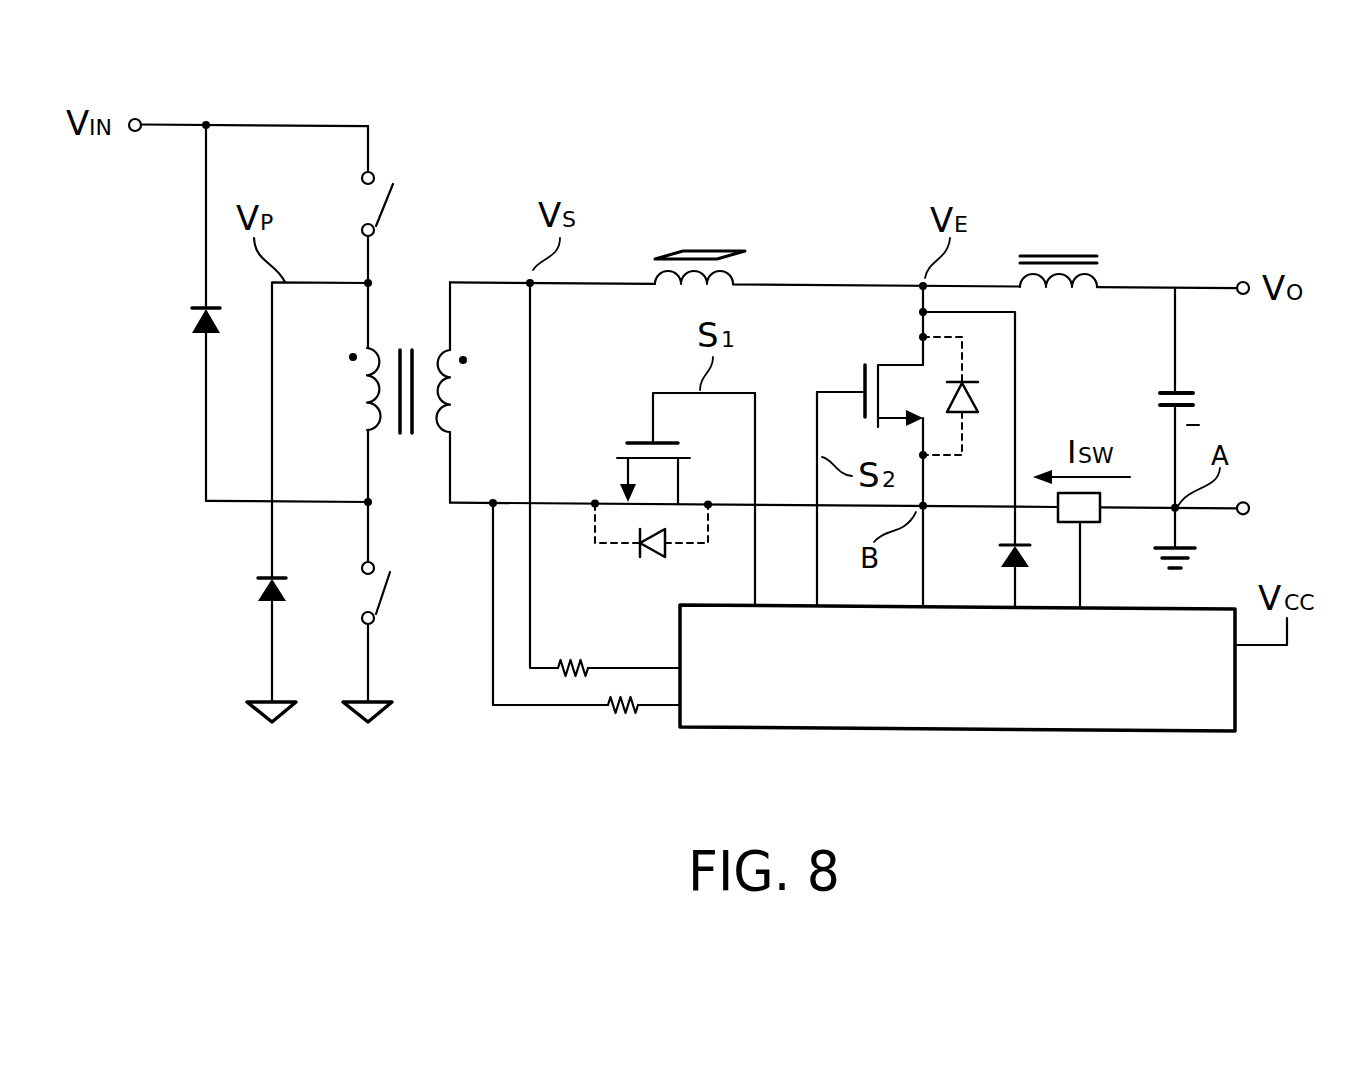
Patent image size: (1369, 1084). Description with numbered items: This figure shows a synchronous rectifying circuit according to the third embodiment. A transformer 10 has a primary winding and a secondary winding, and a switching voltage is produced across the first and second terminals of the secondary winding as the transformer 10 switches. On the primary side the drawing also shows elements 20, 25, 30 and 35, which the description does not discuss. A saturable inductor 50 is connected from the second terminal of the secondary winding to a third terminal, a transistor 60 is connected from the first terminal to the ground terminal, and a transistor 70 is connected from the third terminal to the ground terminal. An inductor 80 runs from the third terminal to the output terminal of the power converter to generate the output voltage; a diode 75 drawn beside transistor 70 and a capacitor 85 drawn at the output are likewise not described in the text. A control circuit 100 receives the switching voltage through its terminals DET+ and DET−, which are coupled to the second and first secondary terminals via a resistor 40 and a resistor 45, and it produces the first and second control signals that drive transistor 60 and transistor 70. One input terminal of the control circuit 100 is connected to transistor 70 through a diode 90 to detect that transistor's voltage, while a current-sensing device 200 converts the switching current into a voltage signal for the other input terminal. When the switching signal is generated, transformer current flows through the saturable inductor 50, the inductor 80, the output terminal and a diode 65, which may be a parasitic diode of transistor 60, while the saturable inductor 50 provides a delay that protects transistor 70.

The transformer 10 is at (410, 313).
The primary switch 20 is at (383, 175).
The primary diode 25 is at (188, 317).
The ground switch 30 is at (392, 597).
The ground diode 35 is at (255, 590).
The resistor 40 is at (573, 687).
The resistor 45 is at (623, 722).
The saturable inductor 50 is at (705, 241).
The transistor 60 is at (626, 435).
The diode 65 is at (652, 562).
The transistor 70 is at (858, 372).
The body diode of second transistor 75 is at (968, 418).
The inductor 80 is at (1055, 248).
The output capacitor 85 is at (1202, 400).
The diode 90 is at (998, 553).
The control circuit 100 is at (1238, 712).
The current-sensing device 200 is at (1093, 528).